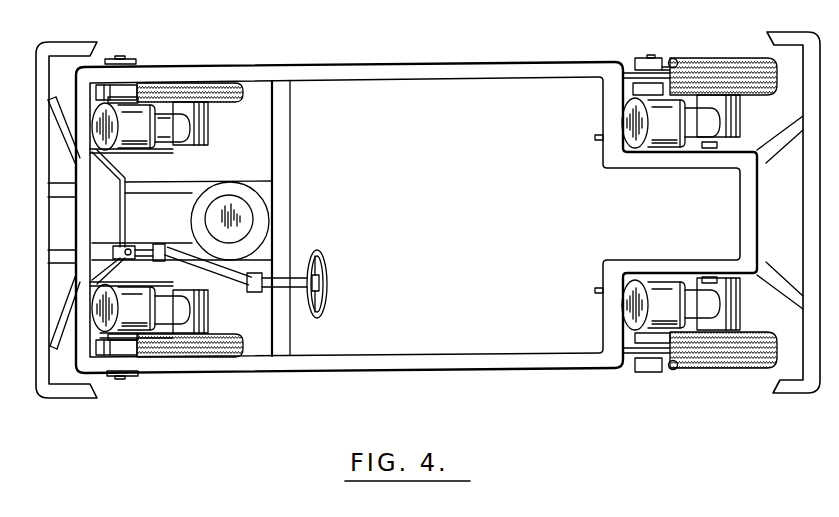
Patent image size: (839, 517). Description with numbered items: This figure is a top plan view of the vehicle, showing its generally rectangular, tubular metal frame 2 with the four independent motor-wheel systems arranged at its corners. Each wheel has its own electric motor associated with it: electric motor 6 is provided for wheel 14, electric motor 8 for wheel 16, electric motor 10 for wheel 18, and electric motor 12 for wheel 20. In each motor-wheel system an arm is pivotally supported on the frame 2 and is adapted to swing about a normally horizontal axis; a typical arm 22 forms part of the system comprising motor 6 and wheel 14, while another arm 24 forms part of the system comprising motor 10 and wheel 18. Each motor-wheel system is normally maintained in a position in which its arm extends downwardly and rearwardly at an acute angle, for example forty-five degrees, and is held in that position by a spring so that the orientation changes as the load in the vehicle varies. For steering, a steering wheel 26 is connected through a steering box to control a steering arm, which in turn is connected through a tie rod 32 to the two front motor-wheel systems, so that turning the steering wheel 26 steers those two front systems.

The frame 2 is at (458, 358).
The electric motor 6 is at (137, 130).
The electric motor 8 is at (140, 297).
The electric motor 10 is at (627, 117).
The electric motor 12 is at (627, 297).
The wheel 14 is at (227, 102).
The wheel 16 is at (227, 335).
The wheel 18 is at (717, 60).
The wheel 20 is at (717, 368).
The arm 22 is at (173, 127).
The arm 24 is at (713, 120).
The steering wheel 26 is at (327, 282).
The tie rod 32 is at (125, 217).